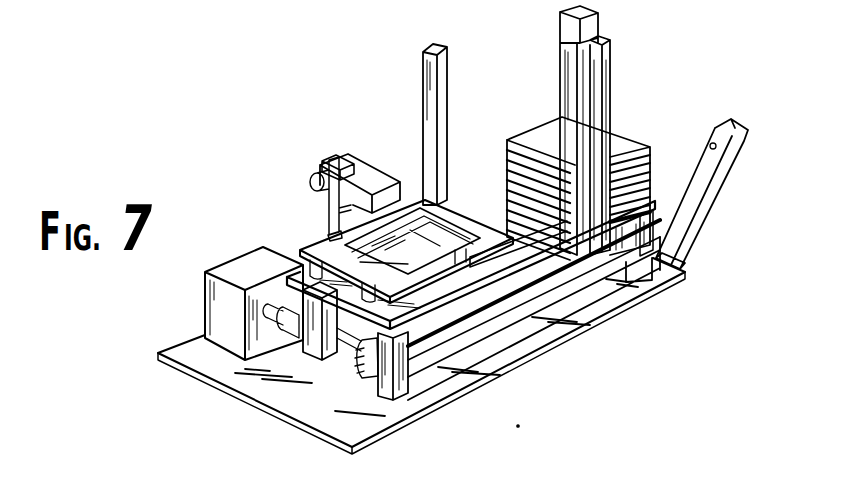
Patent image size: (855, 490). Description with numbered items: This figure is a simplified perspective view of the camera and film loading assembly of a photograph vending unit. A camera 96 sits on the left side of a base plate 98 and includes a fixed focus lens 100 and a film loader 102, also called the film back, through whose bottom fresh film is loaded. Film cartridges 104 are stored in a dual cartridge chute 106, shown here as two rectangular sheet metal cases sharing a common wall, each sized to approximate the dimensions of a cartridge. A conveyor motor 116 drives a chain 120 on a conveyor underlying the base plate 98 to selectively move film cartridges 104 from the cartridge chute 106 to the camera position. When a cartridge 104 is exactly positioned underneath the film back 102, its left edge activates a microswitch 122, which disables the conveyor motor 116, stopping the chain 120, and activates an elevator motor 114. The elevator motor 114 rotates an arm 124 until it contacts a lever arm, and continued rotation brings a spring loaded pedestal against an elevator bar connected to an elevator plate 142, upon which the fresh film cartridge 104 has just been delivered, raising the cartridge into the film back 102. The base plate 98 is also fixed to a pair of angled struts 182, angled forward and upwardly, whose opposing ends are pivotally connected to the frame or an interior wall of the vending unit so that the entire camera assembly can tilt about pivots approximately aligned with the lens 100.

The camera 96 is at (420, 196).
The base plate 98 is at (553, 330).
The fixed focus lens 100 is at (473, 207).
The film loader 102 is at (500, 293).
The film cartridge 104 is at (623, 143).
The dual cartridge chute 106 is at (440, 46).
The elevator motor 114 is at (371, 178).
The conveyor motor 116 is at (220, 303).
The chain 120 is at (360, 367).
The microswitch 122 is at (597, 268).
The arm 124 is at (322, 204).
The elevator plate 142 is at (443, 313).
The angled strut 182 is at (683, 207).